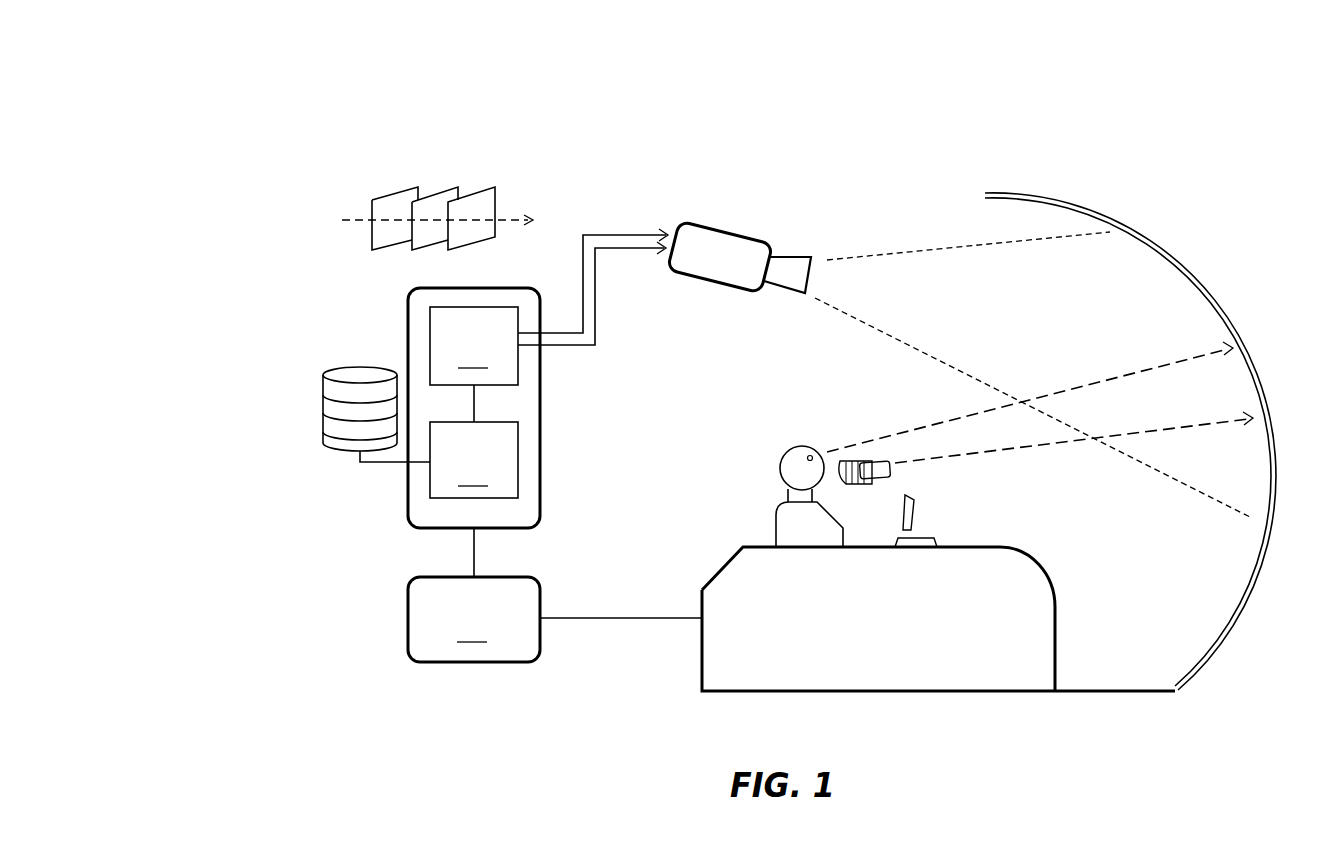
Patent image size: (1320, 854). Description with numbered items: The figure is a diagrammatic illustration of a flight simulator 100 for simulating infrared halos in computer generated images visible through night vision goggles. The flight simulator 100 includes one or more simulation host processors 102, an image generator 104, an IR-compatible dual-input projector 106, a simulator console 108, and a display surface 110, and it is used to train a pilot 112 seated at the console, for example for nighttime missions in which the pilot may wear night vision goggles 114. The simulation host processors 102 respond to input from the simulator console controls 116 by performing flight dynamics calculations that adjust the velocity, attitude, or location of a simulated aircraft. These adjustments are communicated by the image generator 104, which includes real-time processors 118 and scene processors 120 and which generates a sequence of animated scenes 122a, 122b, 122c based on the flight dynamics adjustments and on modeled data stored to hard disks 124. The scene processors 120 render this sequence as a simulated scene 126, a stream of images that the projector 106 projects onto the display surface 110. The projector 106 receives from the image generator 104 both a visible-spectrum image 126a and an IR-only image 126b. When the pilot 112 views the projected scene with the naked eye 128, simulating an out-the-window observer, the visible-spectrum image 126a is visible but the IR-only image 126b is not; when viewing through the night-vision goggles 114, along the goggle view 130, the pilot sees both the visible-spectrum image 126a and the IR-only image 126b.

The flight simulator 100 is at (330, 105).
The simulation host processor 102 is at (474, 619).
The image generator 104 is at (545, 410).
The IR-compatible dual-input projector 106 is at (727, 232).
The simulator console 108 is at (1040, 570).
The display surface 110 is at (1160, 255).
The pilot 112 is at (775, 530).
The night vision goggles 114 is at (876, 480).
The simulator console controls 116 is at (912, 515).
The real-time processor 118 is at (474, 460).
The scene processor 120 is at (474, 346).
The animated scene 122a is at (487, 207).
The animated scene 122b is at (433, 192).
The animated scene 122c is at (398, 205).
The hard disk 124 is at (360, 362).
The simulated scene 126 is at (928, 250).
The visible-spectrum image 126a is at (618, 232).
The IR-only image 126b is at (598, 335).
The naked eye 128 is at (930, 424).
The night-vision goggle view 130 is at (1013, 452).